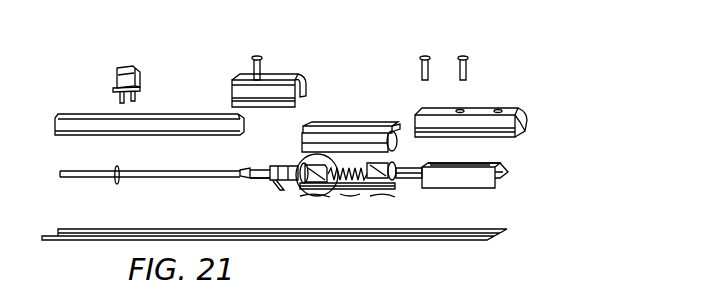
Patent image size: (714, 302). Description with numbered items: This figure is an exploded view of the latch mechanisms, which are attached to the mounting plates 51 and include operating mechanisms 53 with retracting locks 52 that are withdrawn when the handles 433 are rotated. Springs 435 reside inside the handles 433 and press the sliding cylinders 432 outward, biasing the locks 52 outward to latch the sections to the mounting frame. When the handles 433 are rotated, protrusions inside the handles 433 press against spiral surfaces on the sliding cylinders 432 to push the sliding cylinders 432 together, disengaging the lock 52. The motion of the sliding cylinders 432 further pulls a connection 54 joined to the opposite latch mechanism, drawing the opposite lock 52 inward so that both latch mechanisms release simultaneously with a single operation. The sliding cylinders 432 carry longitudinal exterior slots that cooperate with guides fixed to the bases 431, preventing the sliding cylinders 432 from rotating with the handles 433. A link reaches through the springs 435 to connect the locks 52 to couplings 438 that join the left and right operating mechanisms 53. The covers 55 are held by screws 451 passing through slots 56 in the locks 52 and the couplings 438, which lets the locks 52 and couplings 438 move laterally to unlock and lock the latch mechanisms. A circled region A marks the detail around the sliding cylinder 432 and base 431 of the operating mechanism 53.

The screw 451 is at (248, 62).
The cover 55 is at (283, 90).
The detail region A is at (312, 165).
The spring 435 is at (340, 178).
The operating handle 433 is at (377, 140).
The slot 56 is at (275, 168).
The connection 54 is at (117, 186).
The mounting plate 51 is at (197, 228).
The coupling 438 is at (272, 183).
The sliding cylinder 432 is at (320, 183).
The operating mechanism 53 is at (345, 180).
The base 431 is at (382, 185).
The lock 52 is at (465, 178).